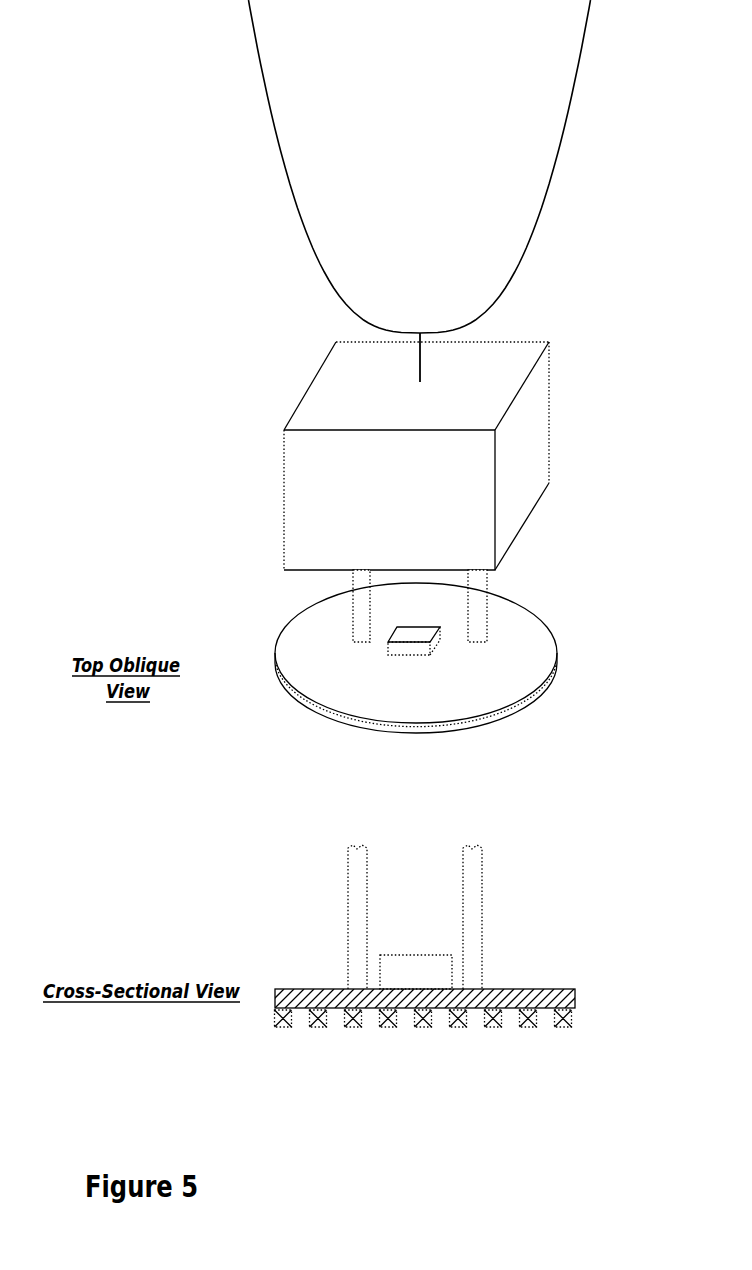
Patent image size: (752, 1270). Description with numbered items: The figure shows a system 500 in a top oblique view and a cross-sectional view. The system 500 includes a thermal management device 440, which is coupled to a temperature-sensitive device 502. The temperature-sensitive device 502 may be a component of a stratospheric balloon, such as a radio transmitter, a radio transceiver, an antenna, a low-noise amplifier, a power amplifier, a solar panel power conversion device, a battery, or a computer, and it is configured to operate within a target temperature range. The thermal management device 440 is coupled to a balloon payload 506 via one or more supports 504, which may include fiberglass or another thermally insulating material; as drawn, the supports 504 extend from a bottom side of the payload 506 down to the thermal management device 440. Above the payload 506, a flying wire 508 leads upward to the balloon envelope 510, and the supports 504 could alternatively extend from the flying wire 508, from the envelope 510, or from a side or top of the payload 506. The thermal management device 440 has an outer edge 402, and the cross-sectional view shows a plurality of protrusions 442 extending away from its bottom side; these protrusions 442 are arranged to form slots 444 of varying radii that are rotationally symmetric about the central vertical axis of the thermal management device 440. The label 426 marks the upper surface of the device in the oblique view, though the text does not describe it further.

The system 500 is at (237, 333).
The balloon envelope 510 is at (508, 276).
The flying wire 508 is at (421, 375).
The balloon payload 506 is at (549, 412).
The support 504 is at (487, 613).
The temperature-sensitive device 502 is at (412, 656).
The thermal management device 440 is at (277, 595).
The outer edge 402 is at (451, 829).
The top surface 426 is at (333, 678).
The protrusions 442 is at (507, 720).
The slots 444 is at (372, 1012).